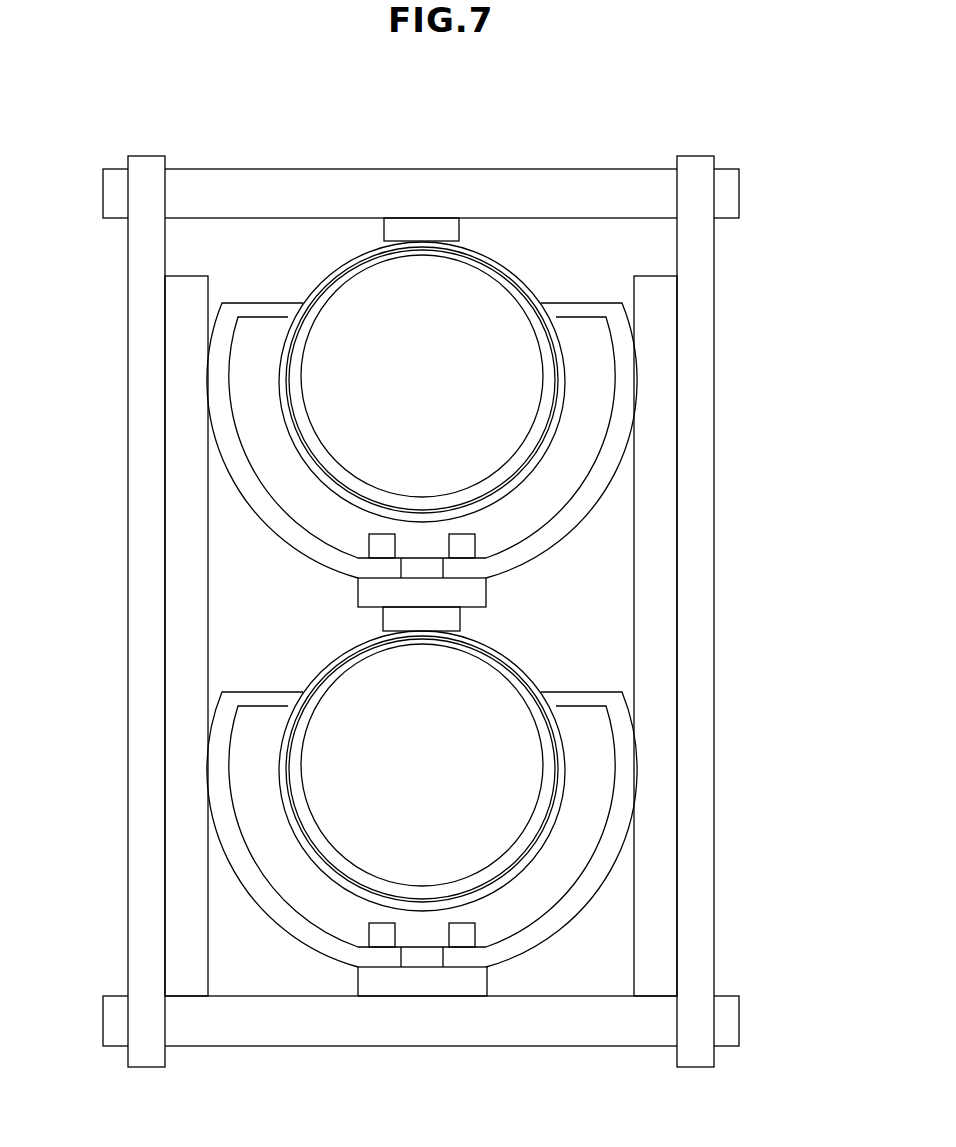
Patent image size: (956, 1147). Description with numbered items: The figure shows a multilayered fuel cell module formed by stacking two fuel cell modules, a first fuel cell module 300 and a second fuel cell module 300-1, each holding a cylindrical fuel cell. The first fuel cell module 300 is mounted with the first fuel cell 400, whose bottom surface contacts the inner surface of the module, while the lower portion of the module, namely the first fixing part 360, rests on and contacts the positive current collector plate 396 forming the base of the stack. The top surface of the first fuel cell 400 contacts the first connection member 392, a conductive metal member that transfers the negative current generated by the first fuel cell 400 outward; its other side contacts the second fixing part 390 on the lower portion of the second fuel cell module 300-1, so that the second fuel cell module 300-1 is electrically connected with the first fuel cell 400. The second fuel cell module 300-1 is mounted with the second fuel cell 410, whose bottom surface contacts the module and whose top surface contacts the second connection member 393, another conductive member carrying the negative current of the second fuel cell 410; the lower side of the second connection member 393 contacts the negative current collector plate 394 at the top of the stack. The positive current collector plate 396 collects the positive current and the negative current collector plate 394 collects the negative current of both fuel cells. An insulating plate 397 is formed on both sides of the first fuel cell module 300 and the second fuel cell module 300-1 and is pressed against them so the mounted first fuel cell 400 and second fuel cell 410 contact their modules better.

The first fuel cell module 300 is at (553, 678).
The second fuel cell module 300-1 is at (556, 283).
The first fixing part 360 is at (425, 982).
The second fixing part 390 is at (473, 599).
The first connection member 392 is at (393, 620).
The second connection member 393 is at (418, 228).
The negative current collector plate 394 is at (575, 185).
The positive current collector plate 396 is at (276, 1027).
The insulating plate 397 is at (190, 980).
The first fuel cell 400 is at (447, 777).
The second fuel cell 410 is at (447, 388).